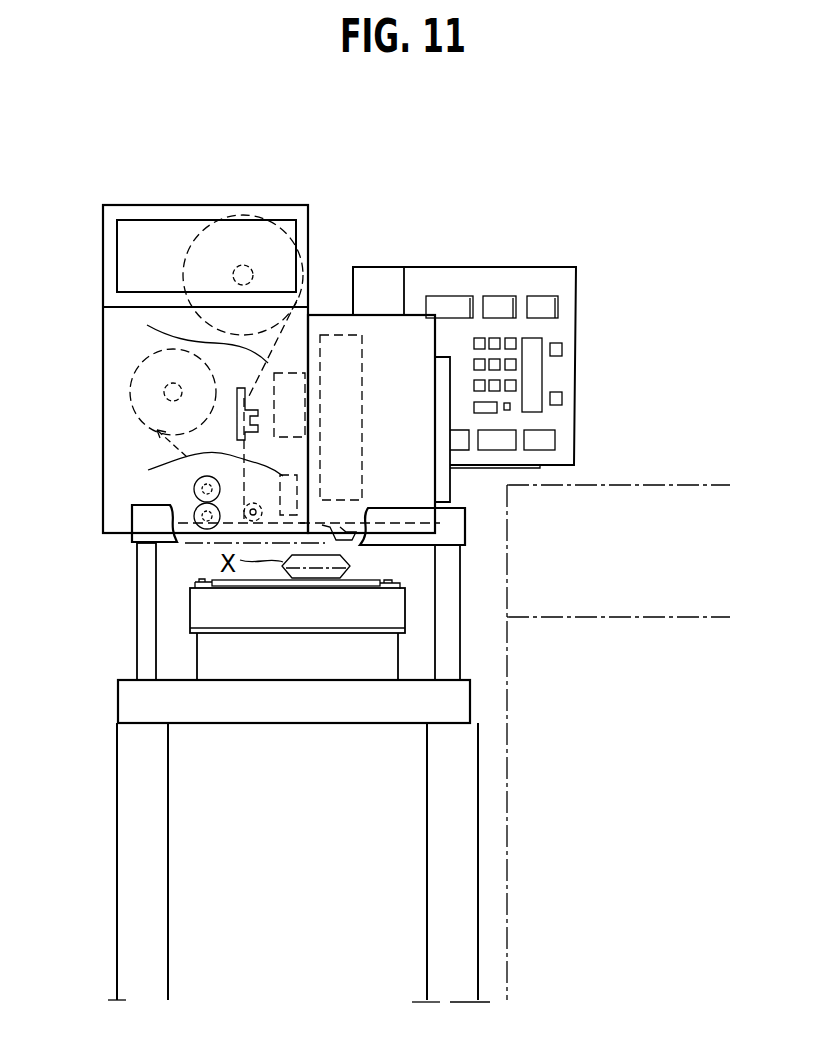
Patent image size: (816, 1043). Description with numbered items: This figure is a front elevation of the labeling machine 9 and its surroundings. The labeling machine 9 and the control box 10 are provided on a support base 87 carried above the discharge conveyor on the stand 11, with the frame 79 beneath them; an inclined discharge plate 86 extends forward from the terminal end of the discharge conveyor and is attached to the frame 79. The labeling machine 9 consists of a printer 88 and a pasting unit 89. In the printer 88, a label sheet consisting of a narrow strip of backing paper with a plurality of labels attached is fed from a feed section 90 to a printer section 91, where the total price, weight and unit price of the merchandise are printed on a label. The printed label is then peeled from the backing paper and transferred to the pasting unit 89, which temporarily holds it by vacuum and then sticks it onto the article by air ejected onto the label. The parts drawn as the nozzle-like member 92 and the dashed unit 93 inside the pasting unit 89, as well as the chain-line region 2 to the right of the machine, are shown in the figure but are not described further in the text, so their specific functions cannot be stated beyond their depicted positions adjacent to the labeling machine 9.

The molding press 2 is at (665, 510).
The labeling machine 9 is at (80, 233).
The control box 10 is at (540, 266).
The stand 11 is at (130, 764).
The frame 79 is at (263, 663).
The inclined discharge plate 86 is at (327, 622).
The support base 87 is at (143, 524).
The printer 88 is at (110, 412).
The pasting unit 89 is at (378, 330).
The feed section 90 is at (255, 238).
The printer section 91 is at (212, 454).
The tape applying nozzle 92 is at (342, 545).
The cutter unit 93 is at (338, 345).